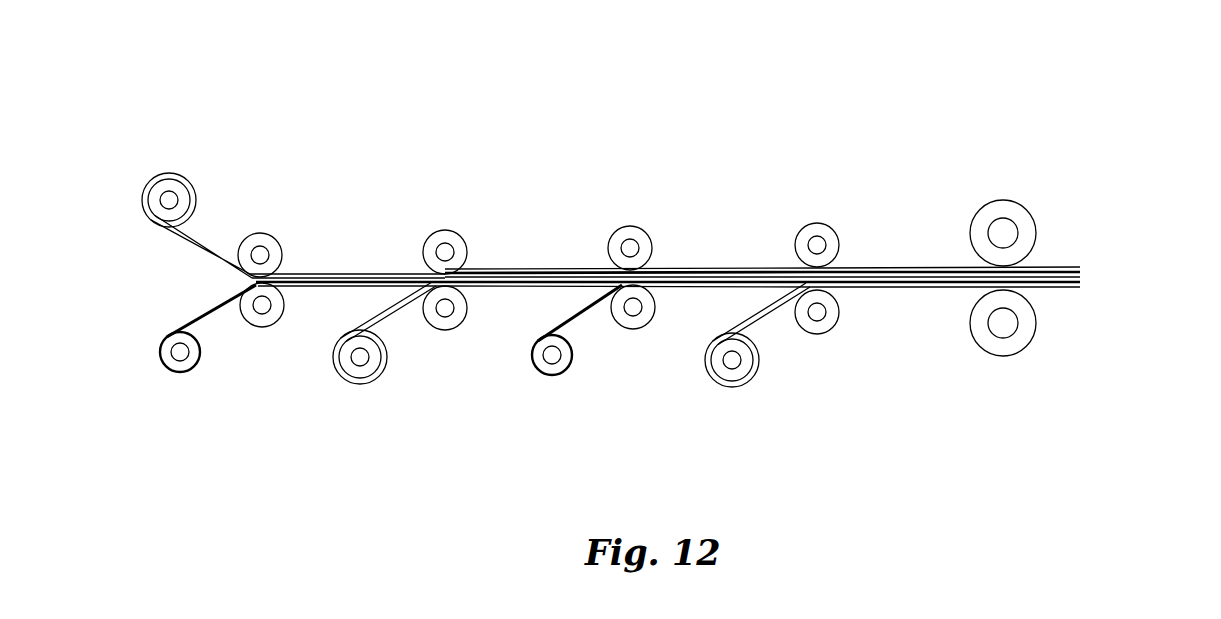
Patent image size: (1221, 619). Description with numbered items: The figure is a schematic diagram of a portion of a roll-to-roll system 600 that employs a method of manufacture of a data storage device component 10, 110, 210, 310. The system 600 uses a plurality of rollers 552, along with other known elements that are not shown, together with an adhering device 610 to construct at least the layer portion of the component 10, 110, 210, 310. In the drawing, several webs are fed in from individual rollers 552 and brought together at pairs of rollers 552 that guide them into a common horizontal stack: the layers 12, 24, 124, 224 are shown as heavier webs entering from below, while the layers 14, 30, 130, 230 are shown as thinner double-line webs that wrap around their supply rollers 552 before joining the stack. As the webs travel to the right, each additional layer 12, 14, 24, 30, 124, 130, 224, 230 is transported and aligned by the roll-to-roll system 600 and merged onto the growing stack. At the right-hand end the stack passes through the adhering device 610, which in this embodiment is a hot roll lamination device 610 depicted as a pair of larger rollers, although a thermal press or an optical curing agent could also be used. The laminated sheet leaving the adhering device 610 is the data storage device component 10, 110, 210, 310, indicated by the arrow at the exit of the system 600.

The system 600 is at (938, 65).
The adhering device 610 is at (1062, 200).
The rollers 552 is at (162, 192).
The data storage device component 10 is at (723, 323).
The data storage device component 110 is at (723, 323).
The data storage device component 210 is at (723, 323).
The data storage device component 310 is at (1088, 303).
The layer 12 is at (428, 336).
The layer 24 is at (428, 336).
The layer 124 is at (428, 336).
The layer 224 is at (212, 312).
The layer 14 is at (473, 280).
The layer 30 is at (473, 280).
The layer 130 is at (473, 280).
The layer 230 is at (182, 243).